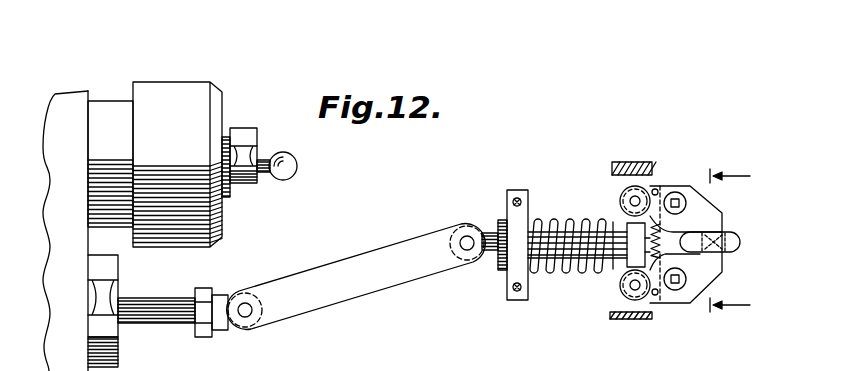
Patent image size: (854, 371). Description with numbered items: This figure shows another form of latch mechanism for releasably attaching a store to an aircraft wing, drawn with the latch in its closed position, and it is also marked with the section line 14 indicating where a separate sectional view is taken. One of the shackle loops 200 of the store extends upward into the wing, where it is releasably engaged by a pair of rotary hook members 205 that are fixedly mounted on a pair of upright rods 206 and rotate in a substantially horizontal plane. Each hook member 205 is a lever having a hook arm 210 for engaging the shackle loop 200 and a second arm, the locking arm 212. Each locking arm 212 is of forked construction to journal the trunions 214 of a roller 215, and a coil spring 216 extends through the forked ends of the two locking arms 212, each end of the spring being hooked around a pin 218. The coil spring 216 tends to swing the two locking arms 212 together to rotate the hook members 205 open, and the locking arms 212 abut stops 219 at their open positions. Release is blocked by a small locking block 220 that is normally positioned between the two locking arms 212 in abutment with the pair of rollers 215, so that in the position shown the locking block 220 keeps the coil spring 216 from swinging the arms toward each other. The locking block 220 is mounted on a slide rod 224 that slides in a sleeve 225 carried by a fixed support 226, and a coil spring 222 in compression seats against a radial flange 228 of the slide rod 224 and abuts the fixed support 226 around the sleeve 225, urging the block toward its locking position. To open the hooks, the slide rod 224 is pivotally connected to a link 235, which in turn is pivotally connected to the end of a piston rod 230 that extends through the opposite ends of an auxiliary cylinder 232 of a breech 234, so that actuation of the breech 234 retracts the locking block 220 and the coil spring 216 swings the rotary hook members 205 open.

The breech 234 is at (97, 88).
The auxiliary cylinder 232 is at (118, 352).
The piston rod 230 is at (170, 325).
The link 235 is at (357, 294).
The slide rod 224 is at (492, 233).
The fixed support 226 is at (507, 276).
The sleeve 225 is at (553, 222).
The coil spring 222 is at (584, 222).
The locking block 220 is at (597, 262).
The radial flange 228 is at (630, 262).
The coil spring 216 is at (666, 241).
The rotary hook member 205 is at (690, 183).
The roller 215 is at (620, 200).
The upright rod 206 is at (684, 196).
The locking arm 212 is at (671, 184).
The pin 218 is at (655, 189).
The stop 219 is at (616, 162).
The trunion 214 is at (618, 318).
The hook arm 210 is at (723, 216).
The section line 14 is at (744, 240).
The shackle loop 200 is at (741, 237).